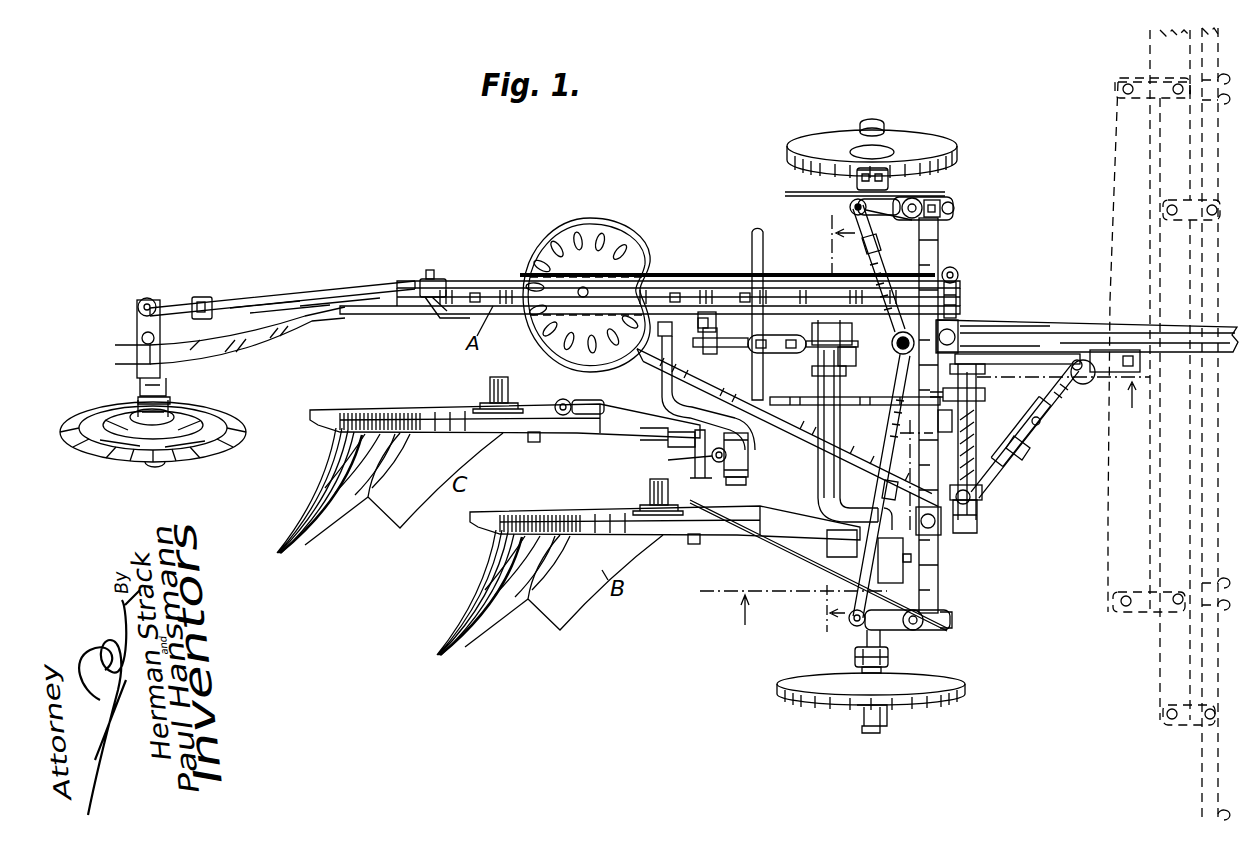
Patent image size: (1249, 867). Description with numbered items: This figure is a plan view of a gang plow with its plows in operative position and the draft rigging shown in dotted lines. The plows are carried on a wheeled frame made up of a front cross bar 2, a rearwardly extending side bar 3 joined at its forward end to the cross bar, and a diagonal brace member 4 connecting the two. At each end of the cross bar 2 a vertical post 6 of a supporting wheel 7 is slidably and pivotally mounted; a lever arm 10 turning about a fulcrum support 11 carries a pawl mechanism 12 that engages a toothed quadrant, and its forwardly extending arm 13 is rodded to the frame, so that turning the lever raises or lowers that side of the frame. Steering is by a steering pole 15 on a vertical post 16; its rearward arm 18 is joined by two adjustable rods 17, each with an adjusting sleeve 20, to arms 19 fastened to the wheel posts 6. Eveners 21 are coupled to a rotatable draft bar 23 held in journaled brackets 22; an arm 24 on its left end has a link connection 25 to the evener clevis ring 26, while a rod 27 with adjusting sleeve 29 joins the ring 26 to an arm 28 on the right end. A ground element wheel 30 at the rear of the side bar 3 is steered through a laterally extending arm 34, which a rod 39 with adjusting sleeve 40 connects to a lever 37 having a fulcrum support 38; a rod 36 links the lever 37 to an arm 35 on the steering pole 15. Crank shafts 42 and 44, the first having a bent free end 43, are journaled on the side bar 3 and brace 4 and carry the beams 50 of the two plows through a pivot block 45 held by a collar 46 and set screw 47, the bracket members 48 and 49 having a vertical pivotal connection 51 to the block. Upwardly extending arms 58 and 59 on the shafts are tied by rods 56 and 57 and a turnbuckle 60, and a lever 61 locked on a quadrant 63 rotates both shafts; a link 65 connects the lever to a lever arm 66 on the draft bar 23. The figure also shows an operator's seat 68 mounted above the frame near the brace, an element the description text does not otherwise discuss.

The front cross bar 2 is at (940, 252).
The side bar 3 is at (262, 322).
The diagonal brace member 4 is at (816, 450).
The vertical post 6 is at (945, 203).
The supporting wheel 7 is at (940, 150).
The lever arm 10 is at (830, 192).
The fulcrum support 11 is at (828, 429).
The pawl mechanism 12 is at (835, 197).
The forwardly extending arm 13 is at (950, 620).
The steering pole 15 is at (1032, 325).
The vertical post 16 is at (955, 330).
The adjustable rod 17 is at (860, 214).
The arm 18 is at (893, 344).
The arm 19 is at (892, 220).
The adjusting sleeve 20 is at (872, 265).
The evener 21 is at (1118, 479).
The journaled bracket 22 is at (945, 538).
The draft bar 23 is at (972, 463).
The arm 24 is at (965, 350).
The link connection 25 is at (1015, 370).
The evener clevis ring 26 is at (1084, 386).
The rod 27 is at (1012, 452).
The arm 28 is at (980, 510).
The adjusting sleeve 29 is at (1040, 423).
The ground element wheel 30 is at (210, 412).
The laterally extending arm 34 is at (160, 292).
The arm 35 is at (958, 292).
The rod 36 is at (690, 272).
The lever 37 is at (436, 280).
The fulcrum support 38 is at (442, 310).
The rod 39 is at (180, 303).
The adjusting sleeve 40 is at (255, 300).
The crank shaft 42 is at (818, 504).
The free end 43 is at (845, 510).
The crank shaft 44 is at (660, 388).
The pivot block 45 is at (749, 441).
The collar 46 is at (749, 456).
The set screw 47 is at (748, 466).
The bracket member 48 is at (670, 435).
The bracket member 49 is at (716, 450).
The plow beam 50 is at (540, 422).
The vertical pivotal connection 51 is at (700, 458).
The rod 56 is at (850, 362).
The rod 57 is at (728, 350).
The upwardly extending arm 58 is at (848, 349).
The upwardly extending arm 59 is at (708, 318).
The turnbuckle 60 is at (776, 356).
The lever 61 is at (866, 385).
The quadrant 63 is at (812, 406).
The link 65 is at (936, 420).
The lever arm 66 is at (986, 400).
The seat 68 is at (600, 224).